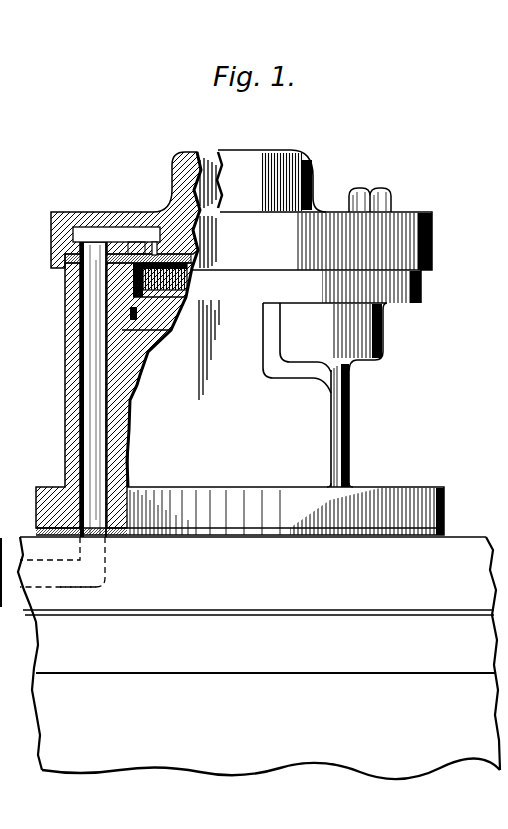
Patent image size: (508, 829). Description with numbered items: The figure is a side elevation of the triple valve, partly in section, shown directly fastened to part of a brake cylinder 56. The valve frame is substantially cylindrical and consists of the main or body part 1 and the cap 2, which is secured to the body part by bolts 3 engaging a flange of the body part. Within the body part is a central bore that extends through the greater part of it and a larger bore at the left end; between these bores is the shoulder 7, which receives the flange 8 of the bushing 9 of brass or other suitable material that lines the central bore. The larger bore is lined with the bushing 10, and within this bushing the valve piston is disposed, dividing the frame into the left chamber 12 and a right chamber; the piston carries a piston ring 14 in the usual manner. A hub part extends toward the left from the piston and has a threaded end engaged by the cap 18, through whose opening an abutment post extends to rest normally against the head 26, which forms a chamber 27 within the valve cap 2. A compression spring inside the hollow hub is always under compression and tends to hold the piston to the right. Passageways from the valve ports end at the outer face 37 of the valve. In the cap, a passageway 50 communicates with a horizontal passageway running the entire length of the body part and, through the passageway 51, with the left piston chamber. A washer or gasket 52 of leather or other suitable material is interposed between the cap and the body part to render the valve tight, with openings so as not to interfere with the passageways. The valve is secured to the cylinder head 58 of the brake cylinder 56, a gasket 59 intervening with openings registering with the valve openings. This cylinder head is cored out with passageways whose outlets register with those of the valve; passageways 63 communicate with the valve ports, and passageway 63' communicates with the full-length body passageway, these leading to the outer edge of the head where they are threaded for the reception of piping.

The main or body part 1 is at (346, 430).
The cap 2 is at (433, 223).
The bolts 3 is at (386, 196).
The shoulder 7 is at (150, 344).
The flange 8 is at (107, 357).
The bushing 9 is at (110, 373).
The bushing 10 is at (145, 290).
The left chamber 12 is at (128, 243).
The piston ring 14 is at (130, 314).
The cap 18 is at (88, 343).
The head 26 is at (258, 156).
The chamber 27 is at (212, 151).
The outer face 37 is at (377, 530).
The passageway 50 is at (88, 231).
The passageway 51 is at (153, 241).
The washer or gasket 52 is at (108, 263).
The brake cylinder 56 is at (43, 715).
The cylinder head 58 is at (454, 548).
The gasket 59 is at (255, 612).
The passageways 63 is at (11, 554).
The passageway 63' is at (49, 623).